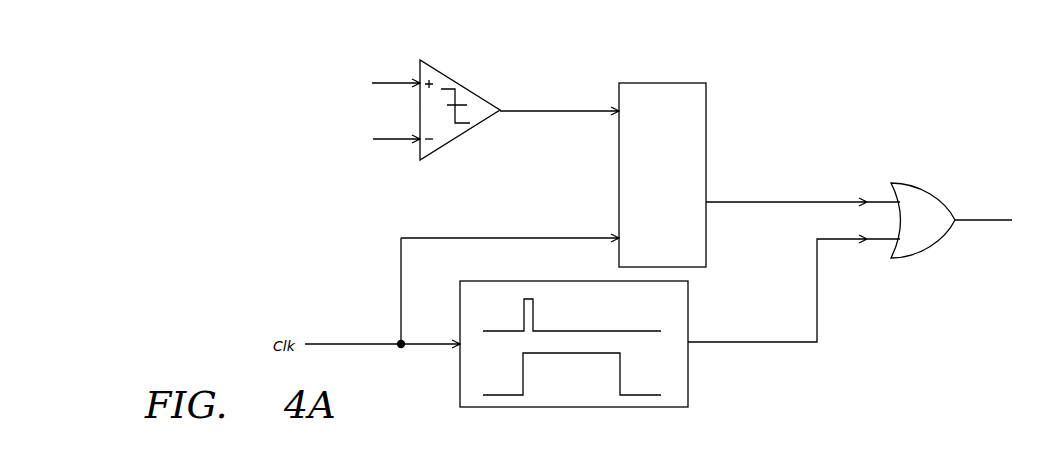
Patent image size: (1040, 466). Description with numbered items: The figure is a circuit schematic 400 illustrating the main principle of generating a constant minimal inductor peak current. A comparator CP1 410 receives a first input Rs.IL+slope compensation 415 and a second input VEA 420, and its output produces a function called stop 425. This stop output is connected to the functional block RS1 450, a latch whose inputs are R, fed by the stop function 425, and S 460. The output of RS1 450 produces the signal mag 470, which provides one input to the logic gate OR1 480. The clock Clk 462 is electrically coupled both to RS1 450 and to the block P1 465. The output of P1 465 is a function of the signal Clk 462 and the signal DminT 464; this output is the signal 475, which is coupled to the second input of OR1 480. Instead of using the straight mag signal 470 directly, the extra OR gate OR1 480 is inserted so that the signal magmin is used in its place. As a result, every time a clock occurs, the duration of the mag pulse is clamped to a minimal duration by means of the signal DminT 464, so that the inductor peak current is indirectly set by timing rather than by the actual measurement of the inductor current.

The circuit schematic 400 is at (218, 172).
The comparator CP1 410 is at (463, 133).
The first input Rs.IL+slope compensation 415 is at (343, 69).
The second input VEA 420 is at (336, 146).
The stop function 425 is at (586, 110).
The functional block RS1 450 is at (676, 83).
The S input 460 is at (586, 238).
The clock Clk 462 is at (646, 327).
The signal DminT 464 is at (646, 390).
The P1 465 is at (688, 396).
The signal mag 470 is at (861, 192).
The output signal of P1 475 is at (861, 249).
The logic gate OR1 480 is at (916, 256).